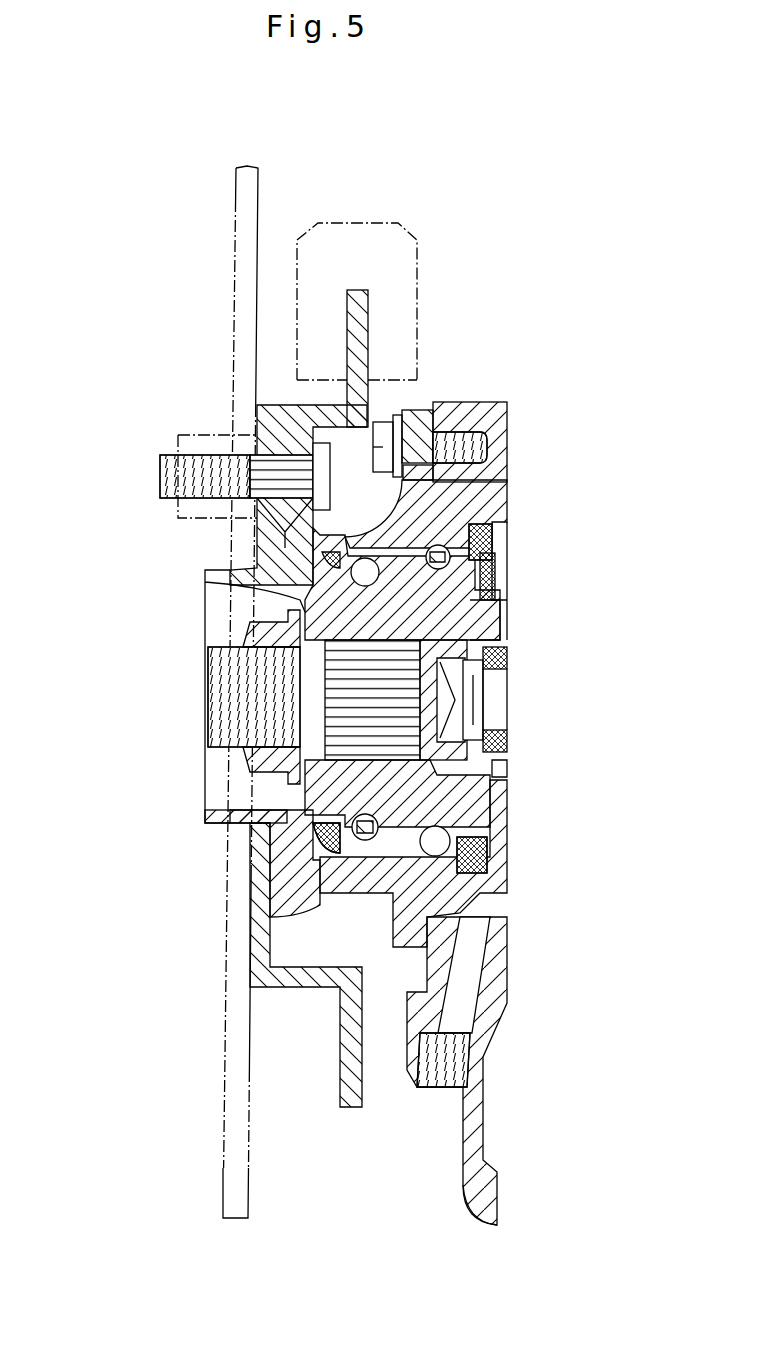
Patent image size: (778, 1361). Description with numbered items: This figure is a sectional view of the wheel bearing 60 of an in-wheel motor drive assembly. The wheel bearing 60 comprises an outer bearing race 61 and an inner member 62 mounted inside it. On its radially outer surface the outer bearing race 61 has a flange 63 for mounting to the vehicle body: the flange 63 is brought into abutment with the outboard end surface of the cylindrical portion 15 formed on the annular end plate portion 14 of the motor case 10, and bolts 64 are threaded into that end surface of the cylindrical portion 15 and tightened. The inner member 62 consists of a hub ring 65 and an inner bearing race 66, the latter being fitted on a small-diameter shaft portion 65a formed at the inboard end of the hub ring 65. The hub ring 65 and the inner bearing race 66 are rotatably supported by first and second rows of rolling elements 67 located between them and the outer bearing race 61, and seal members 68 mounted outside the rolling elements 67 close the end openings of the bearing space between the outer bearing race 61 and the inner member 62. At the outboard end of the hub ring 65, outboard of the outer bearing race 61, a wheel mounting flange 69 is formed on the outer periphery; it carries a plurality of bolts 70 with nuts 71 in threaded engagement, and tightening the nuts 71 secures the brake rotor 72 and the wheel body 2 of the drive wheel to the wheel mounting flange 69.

The wheel body 2 is at (241, 191).
The motor case 10 is at (470, 1220).
The end plate portion 14 is at (467, 1123).
The cylindrical portion 15 is at (450, 418).
The wheel bearing 60 is at (196, 571).
The outer bearing race 61 is at (372, 531).
The inner member 62 is at (193, 795).
The flange 63 is at (420, 408).
The bolts 64 is at (373, 447).
The hub ring 65 is at (292, 620).
The small-diameter shaft portion 65a is at (480, 620).
The inner bearing race 66 is at (483, 580).
The rolling elements 67 is at (445, 548).
The seal members 68 is at (460, 865).
The wheel mounting flange 69 is at (287, 535).
The bolts 70 is at (265, 440).
The nuts 71 is at (178, 440).
The brake rotor 72 is at (347, 317).